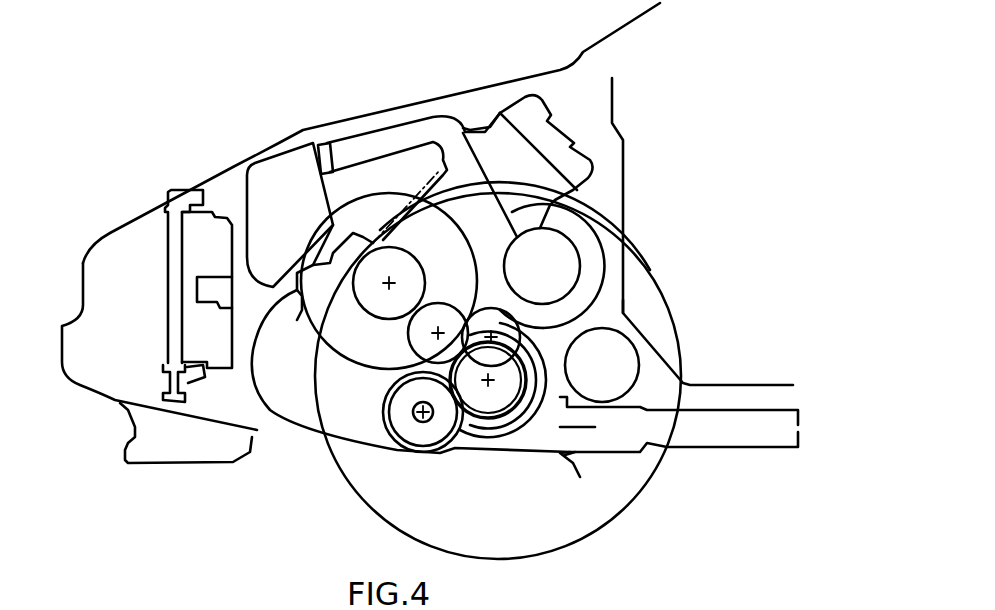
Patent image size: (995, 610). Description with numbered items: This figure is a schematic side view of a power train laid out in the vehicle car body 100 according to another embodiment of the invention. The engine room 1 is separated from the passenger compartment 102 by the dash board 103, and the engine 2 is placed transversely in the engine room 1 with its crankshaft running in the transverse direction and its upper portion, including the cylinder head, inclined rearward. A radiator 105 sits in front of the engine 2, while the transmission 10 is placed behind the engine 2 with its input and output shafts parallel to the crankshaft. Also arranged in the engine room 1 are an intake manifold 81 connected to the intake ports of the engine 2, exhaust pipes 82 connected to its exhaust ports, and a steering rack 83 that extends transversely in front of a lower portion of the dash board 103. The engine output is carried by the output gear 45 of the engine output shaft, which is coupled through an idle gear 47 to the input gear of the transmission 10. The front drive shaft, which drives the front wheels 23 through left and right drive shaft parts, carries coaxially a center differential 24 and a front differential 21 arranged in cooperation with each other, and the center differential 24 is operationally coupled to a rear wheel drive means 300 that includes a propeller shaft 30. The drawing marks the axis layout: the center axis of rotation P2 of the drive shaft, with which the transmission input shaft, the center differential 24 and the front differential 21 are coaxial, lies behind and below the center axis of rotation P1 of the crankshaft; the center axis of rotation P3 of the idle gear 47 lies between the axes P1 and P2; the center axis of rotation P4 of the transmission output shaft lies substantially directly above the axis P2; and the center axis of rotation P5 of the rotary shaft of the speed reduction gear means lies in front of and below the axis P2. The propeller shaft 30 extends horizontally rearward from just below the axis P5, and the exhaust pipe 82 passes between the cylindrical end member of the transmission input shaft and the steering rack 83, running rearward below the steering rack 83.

The vehicle car body 100 is at (500, 76).
The radiator 105 is at (165, 278).
The intake manifold 81 is at (387, 125).
The engine room 1 is at (585, 117).
The engine 2 is at (418, 190).
The output gear 45 is at (385, 247).
The idle gear 47 is at (478, 262).
The exhaust pipes 82 is at (604, 266).
The transmission 10 is at (552, 330).
The steering rack 83 is at (640, 363).
The front wheels 23 is at (678, 313).
The dash board 103 is at (625, 165).
The passenger compartment 102 is at (735, 224).
The front differential 21 is at (546, 455).
The propeller shaft 30 is at (566, 456).
The center differential 24 is at (485, 458).
The rear wheel drive means 300 is at (397, 457).
The center axis of rotation of the crankshaft P1 is at (389, 283).
The center axis of rotation of the drive shaft P2 is at (488, 380).
The center axis of rotation of the idle gear P3 is at (438, 333).
The center axis of rotation of the transmission output shaft P4 is at (493, 337).
The center axis of rotation of the rotary shaft of the speed reduction gear means P5 is at (423, 412).